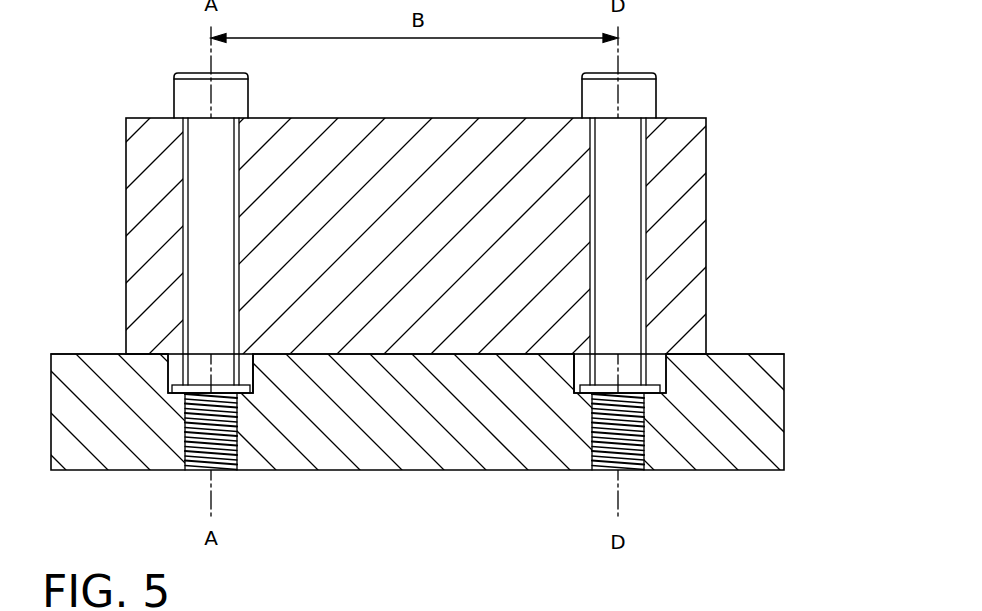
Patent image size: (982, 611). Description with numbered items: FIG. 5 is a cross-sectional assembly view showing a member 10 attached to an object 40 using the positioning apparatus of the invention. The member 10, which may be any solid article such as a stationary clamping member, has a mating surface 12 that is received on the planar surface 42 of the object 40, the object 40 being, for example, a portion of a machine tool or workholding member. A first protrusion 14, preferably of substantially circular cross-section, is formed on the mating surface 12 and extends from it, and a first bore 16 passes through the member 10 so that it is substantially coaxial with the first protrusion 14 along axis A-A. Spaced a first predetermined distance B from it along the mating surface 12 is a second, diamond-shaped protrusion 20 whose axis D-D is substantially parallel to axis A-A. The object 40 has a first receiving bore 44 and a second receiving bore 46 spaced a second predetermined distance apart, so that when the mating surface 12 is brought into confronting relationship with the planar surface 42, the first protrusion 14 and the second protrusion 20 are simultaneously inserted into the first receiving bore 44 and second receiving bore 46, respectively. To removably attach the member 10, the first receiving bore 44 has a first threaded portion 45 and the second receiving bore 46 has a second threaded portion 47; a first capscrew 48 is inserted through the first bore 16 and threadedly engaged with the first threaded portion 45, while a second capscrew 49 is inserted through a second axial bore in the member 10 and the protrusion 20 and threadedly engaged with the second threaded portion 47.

The member 10 is at (727, 225).
The mating surface 12 is at (155, 357).
The first protrusion 14 is at (170, 372).
The first bore 16 is at (183, 207).
The second diamond-shaped protrusion 20 is at (668, 372).
The object 40 is at (793, 447).
The planar surface 42 is at (745, 353).
The first receiving bore 44 is at (250, 398).
The first threaded portion 45 is at (229, 471).
The second receiving bore 46 is at (583, 396).
The second threaded portion 47 is at (640, 471).
The capscrew 48 is at (238, 96).
The capscrew 49 is at (641, 97).